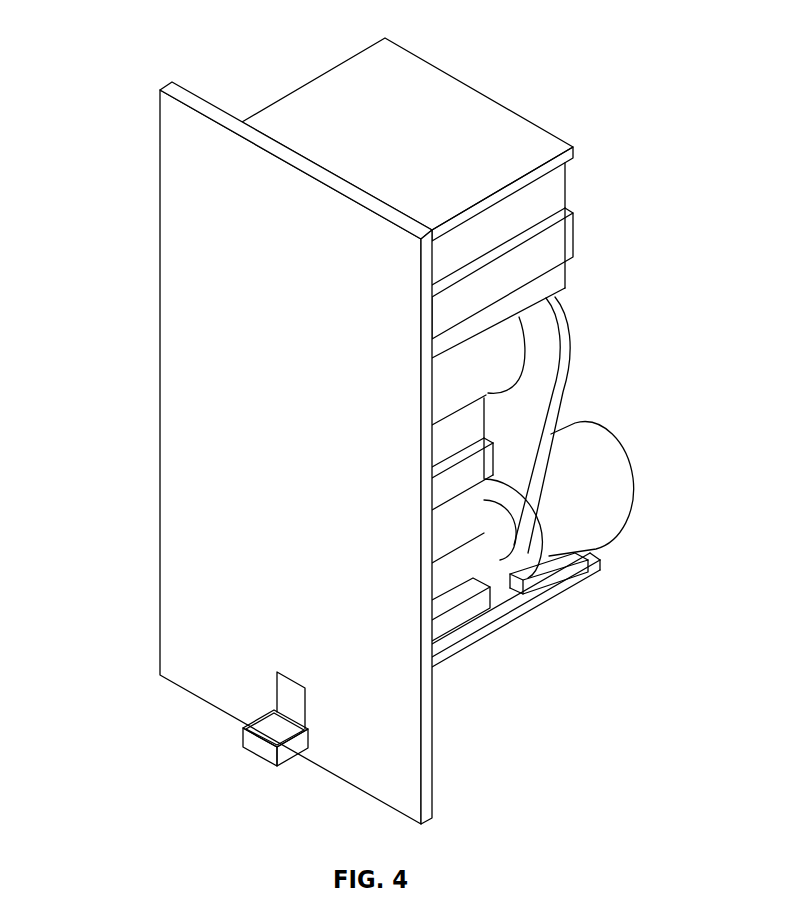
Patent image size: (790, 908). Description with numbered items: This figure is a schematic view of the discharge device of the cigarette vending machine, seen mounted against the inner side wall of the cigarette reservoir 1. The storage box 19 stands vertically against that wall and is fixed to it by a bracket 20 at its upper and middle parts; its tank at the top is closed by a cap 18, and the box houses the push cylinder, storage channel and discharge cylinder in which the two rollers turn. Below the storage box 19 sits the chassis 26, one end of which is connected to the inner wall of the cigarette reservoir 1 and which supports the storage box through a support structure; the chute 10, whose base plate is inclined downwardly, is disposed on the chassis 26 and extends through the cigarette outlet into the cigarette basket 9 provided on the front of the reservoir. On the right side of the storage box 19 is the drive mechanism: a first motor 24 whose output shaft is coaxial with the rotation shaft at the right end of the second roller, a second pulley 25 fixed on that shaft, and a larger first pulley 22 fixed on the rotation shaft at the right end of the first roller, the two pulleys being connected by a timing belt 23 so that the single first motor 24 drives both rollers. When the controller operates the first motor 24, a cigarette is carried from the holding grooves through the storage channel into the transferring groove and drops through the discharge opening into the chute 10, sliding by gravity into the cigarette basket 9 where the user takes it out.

The cigarette reservoir 1 is at (247, 453).
The cigarette basket 9 is at (249, 728).
The chute 10 is at (476, 644).
The cap 18 is at (414, 131).
The storage box 19 is at (542, 247).
The bracket 20 is at (542, 264).
The first pulley 22 is at (569, 341).
The timing belt 23 is at (582, 425).
The first motor 24 is at (614, 489).
The second pulley 25 is at (553, 543).
The chassis 26 is at (516, 610).